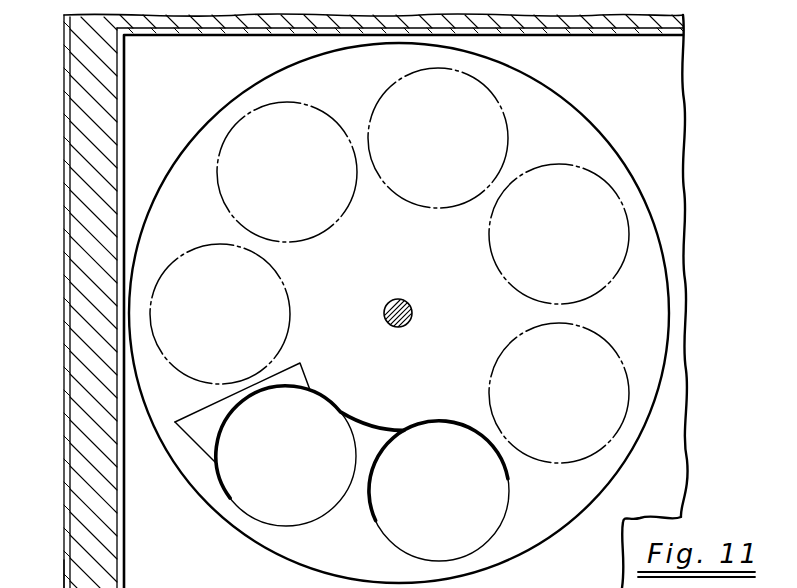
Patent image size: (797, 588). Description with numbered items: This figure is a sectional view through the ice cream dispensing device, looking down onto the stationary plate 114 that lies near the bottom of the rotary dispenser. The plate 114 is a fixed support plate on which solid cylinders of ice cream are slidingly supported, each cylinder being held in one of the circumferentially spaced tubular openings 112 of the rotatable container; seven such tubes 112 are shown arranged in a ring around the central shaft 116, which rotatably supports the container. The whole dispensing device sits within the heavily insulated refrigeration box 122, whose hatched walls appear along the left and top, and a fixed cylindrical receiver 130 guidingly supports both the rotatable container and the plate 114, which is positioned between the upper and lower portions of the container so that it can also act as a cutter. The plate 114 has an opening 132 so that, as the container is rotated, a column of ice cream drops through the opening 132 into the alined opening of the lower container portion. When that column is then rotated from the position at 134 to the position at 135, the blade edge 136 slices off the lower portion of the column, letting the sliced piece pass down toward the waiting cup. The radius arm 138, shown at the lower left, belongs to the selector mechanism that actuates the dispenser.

The tubular openings 112 is at (375, 102).
The stationary plate 114 is at (589, 141).
The central shaft 116 is at (409, 306).
The refrigeration box 122 is at (66, 380).
The fixed cylindrical receiver 130 is at (645, 392).
The opening 132 is at (367, 436).
The position 134 is at (298, 383).
The position 135 is at (285, 293).
The blade edge 136 is at (206, 409).
The radius arm 138 is at (53, 587).